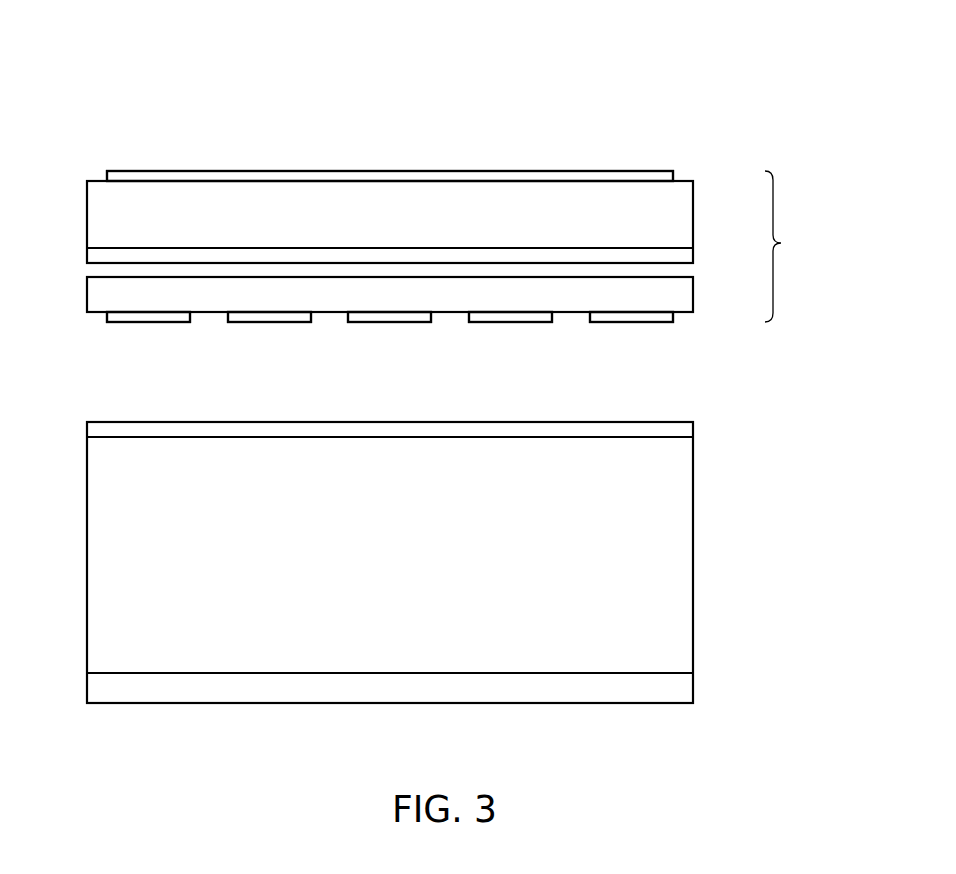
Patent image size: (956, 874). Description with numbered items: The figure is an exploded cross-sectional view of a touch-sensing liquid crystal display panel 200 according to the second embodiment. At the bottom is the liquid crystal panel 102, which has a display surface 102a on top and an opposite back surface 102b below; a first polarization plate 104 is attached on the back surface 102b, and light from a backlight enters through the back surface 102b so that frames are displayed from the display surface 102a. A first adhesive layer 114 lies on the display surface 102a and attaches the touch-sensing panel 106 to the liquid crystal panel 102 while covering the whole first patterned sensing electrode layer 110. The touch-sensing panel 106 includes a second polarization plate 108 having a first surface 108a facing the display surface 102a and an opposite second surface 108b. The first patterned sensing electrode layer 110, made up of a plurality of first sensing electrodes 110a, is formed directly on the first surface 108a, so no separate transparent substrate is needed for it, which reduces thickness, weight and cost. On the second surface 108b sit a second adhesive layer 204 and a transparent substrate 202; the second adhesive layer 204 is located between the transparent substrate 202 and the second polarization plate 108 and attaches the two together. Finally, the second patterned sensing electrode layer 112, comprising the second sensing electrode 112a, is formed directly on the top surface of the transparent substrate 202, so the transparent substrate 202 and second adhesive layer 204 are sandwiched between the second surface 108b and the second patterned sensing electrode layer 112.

The touch-sensing liquid crystal display panel 200 is at (700, 70).
The second patterned sensing electrode layer 112 is at (105, 174).
The second sensing electrode 112a is at (387, 177).
The transparent substrate 202 is at (670, 225).
The second adhesive layer 204 is at (688, 257).
The touch-sensing panel 106 is at (781, 243).
The second polarization plate 108 is at (670, 305).
The first surface 108a is at (683, 313).
The second surface 108b is at (679, 277).
The first patterned sensing electrode layer 110 is at (105, 320).
The first sensing electrode 110a is at (152, 322).
The liquid crystal panel 102 is at (665, 577).
The display surface 102a is at (676, 433).
The back surface 102b is at (670, 673).
The first adhesive layer 114 is at (690, 424).
The first polarization plate 104 is at (683, 693).